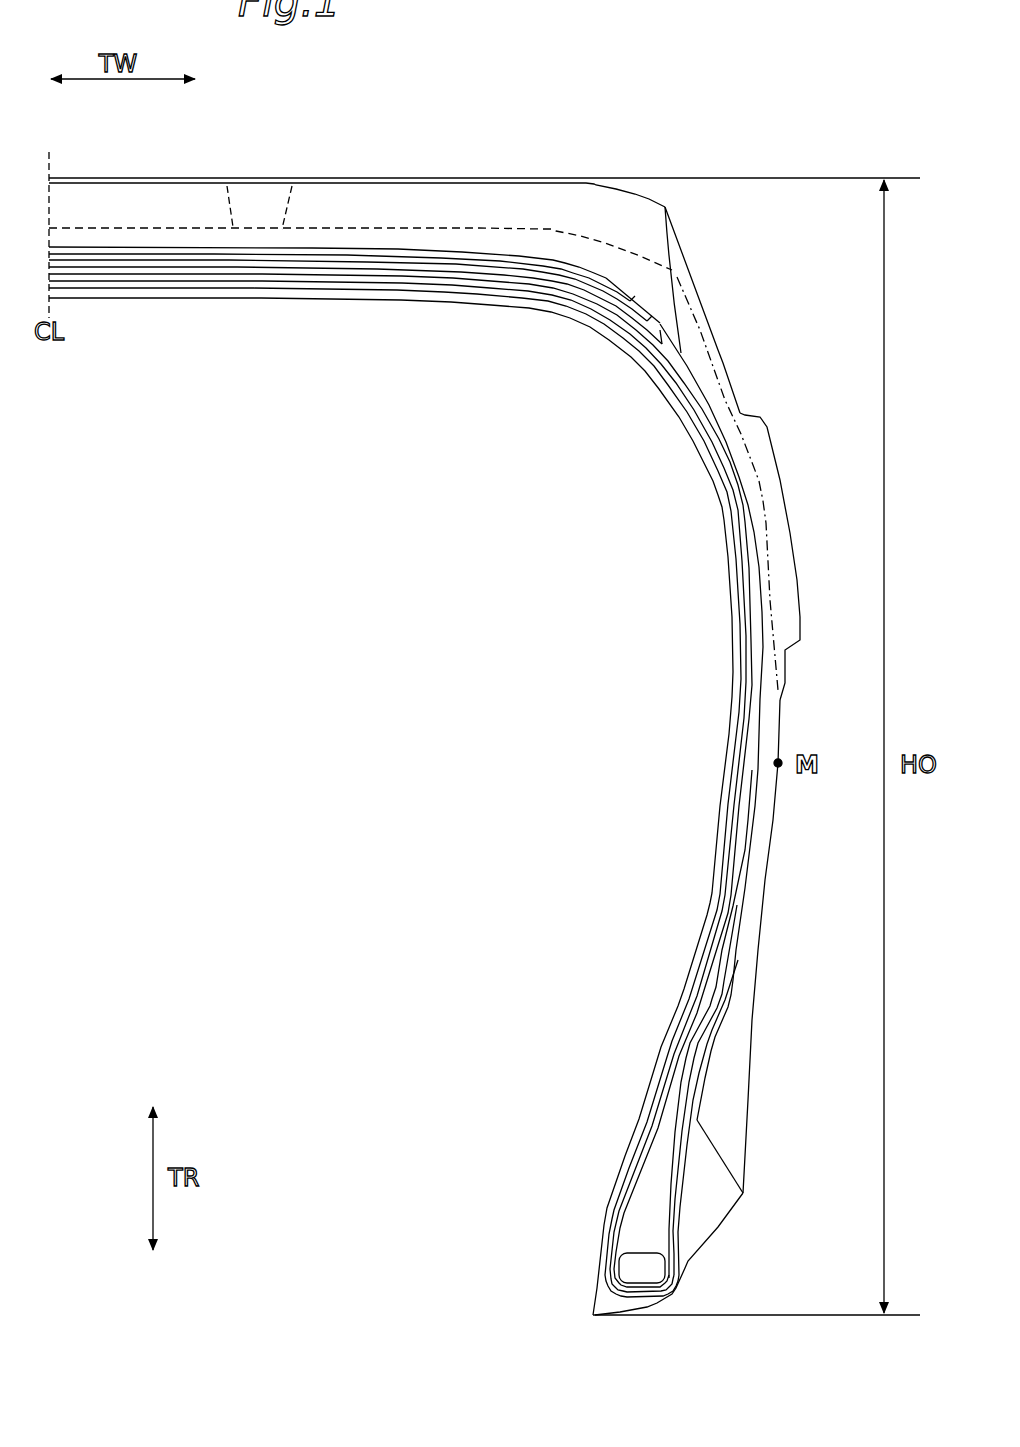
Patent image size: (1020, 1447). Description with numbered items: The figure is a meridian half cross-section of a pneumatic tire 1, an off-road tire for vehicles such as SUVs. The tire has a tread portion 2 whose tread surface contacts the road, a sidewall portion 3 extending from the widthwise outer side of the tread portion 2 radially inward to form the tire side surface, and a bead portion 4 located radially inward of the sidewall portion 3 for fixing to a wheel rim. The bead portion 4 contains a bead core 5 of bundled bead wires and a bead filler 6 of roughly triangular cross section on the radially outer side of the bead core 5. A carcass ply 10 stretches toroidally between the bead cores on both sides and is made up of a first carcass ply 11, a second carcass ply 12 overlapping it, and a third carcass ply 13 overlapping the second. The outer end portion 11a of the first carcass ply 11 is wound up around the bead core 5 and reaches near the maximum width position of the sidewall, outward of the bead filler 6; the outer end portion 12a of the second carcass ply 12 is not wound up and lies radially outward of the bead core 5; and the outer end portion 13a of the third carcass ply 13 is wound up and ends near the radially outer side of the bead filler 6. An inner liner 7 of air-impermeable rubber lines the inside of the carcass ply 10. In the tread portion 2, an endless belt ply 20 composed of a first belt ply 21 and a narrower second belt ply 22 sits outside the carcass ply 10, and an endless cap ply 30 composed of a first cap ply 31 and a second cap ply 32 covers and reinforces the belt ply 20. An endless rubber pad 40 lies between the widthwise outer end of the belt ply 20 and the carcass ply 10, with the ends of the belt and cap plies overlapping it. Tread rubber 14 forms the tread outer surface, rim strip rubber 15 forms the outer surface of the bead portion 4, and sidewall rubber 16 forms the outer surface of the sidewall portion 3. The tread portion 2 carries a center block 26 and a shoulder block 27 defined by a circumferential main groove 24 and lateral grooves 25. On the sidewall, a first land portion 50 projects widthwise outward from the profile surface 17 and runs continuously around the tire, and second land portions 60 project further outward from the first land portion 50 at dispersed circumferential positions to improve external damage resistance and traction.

The pneumatic tire 1 is at (580, 147).
The tread portion 2 is at (158, 177).
The sidewall portion 3 is at (792, 797).
The bead portion 4 is at (576, 1279).
The bead core 5 is at (645, 1262).
The bead filler 6 is at (647, 1220).
The inner liner 7 is at (197, 298).
The carcass ply 10 is at (570, 510).
The first carcass ply 11 is at (720, 502).
The second carcass ply 12 is at (733, 540).
The third carcass ply 13 is at (745, 573).
The outer end portion of the first carcass ply 11a is at (755, 770).
The outer end portion of the second carcass ply 12a is at (623, 1213).
The outer end portion of the third carcass ply 13a is at (735, 905).
The tread rubber 14 is at (191, 198).
The rim strip rubber 15 is at (605, 1303).
The sidewall rubber 16 is at (763, 870).
The profile surface 17 is at (770, 597).
The belt ply 20 is at (280, 377).
The first belt ply 21 is at (297, 276).
The second belt ply 22 is at (348, 268).
The main groove 24 is at (228, 194).
The lateral groove 25 is at (112, 228).
The center block 26 is at (78, 202).
The shoulder block 27 is at (490, 203).
The cap ply 30 is at (420, 128).
The first cap ply 31 is at (331, 248).
The second cap ply 32 is at (388, 253).
The pad 40 is at (693, 377).
The first land portion 50 is at (732, 378).
The second land portion 60 is at (773, 450).